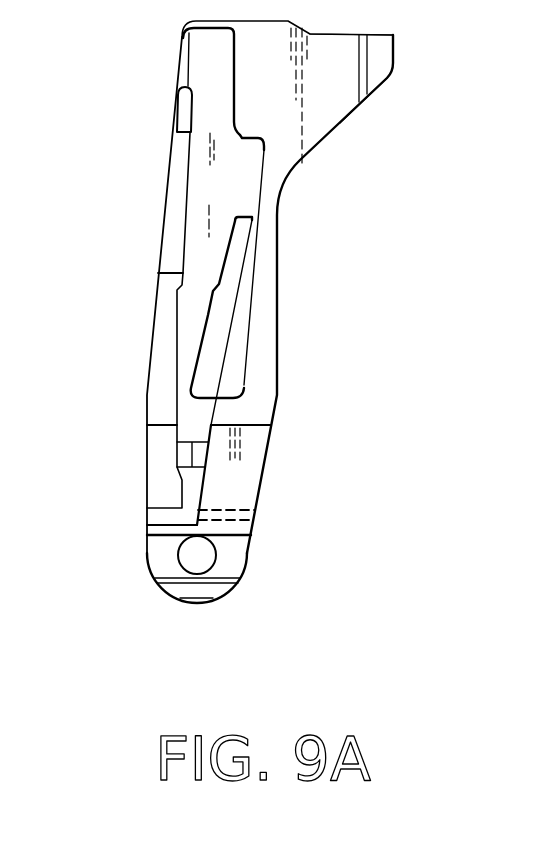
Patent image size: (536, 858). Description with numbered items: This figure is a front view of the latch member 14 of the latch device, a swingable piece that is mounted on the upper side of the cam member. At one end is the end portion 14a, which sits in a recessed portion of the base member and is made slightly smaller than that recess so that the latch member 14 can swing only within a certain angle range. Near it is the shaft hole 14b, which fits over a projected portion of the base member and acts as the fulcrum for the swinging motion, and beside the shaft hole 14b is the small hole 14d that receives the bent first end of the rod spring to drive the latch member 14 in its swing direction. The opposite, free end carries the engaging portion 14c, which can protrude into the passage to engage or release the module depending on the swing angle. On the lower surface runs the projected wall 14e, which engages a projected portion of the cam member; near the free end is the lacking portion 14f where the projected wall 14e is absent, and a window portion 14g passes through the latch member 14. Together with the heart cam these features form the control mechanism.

The latch member 14 is at (138, 390).
The end portion 14a is at (245, 545).
The shaft hole 14b is at (200, 566).
The engaging portion 14c is at (382, 56).
The small hole 14d is at (237, 503).
The projected wall 14e is at (185, 113).
The lacking portion 14f is at (190, 55).
The window portion 14g is at (227, 310).